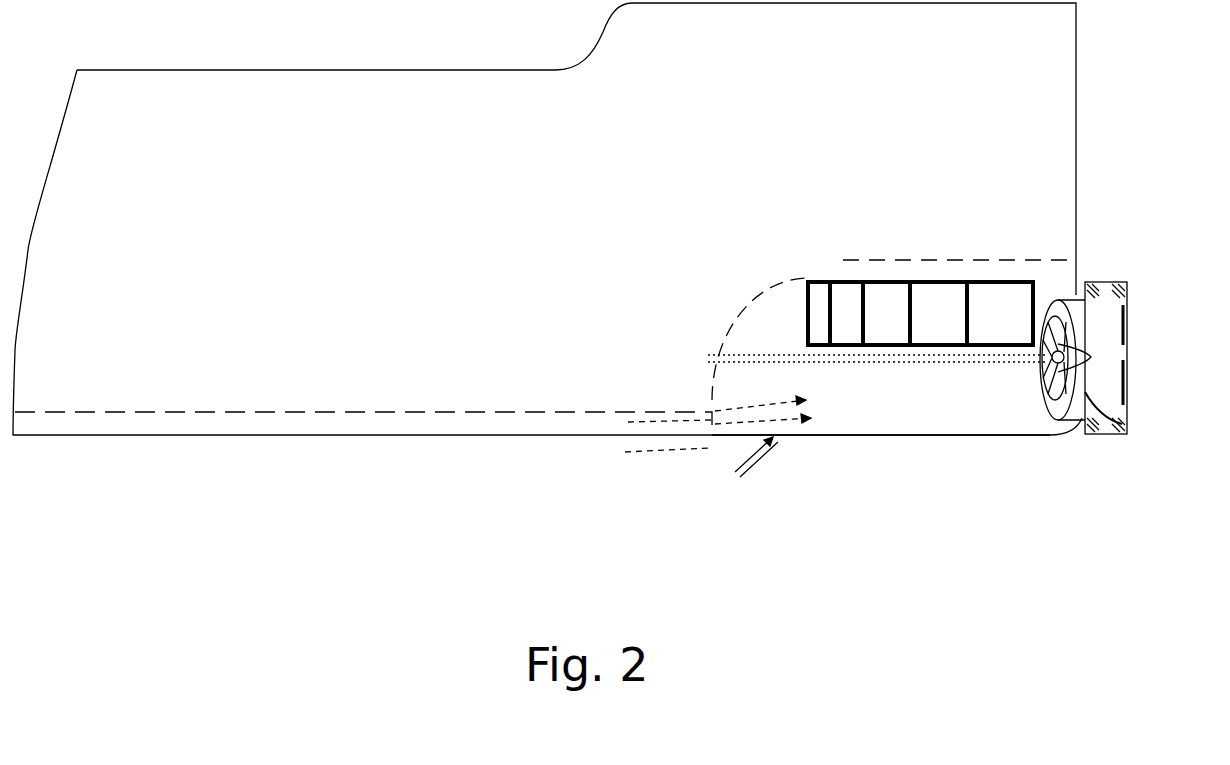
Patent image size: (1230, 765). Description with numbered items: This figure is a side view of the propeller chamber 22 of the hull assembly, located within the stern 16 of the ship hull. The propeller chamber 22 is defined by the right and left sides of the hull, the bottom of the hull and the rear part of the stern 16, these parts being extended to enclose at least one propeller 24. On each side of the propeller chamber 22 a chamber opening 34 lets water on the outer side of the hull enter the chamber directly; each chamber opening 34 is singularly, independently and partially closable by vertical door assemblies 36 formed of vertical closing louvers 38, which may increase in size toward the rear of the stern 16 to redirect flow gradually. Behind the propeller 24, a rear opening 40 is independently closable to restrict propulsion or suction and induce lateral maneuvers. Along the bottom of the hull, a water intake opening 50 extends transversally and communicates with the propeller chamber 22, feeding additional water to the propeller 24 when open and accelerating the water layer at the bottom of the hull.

The stern 16 is at (1078, 222).
The propeller chamber 22 is at (1005, 398).
The propeller 24 is at (1092, 357).
The chamber opening 34 is at (838, 347).
The vertical door assembly 36 is at (995, 322).
The vertical closing louver 38 is at (938, 322).
The rear opening 40 is at (1128, 428).
The water intake opening 50 is at (745, 445).